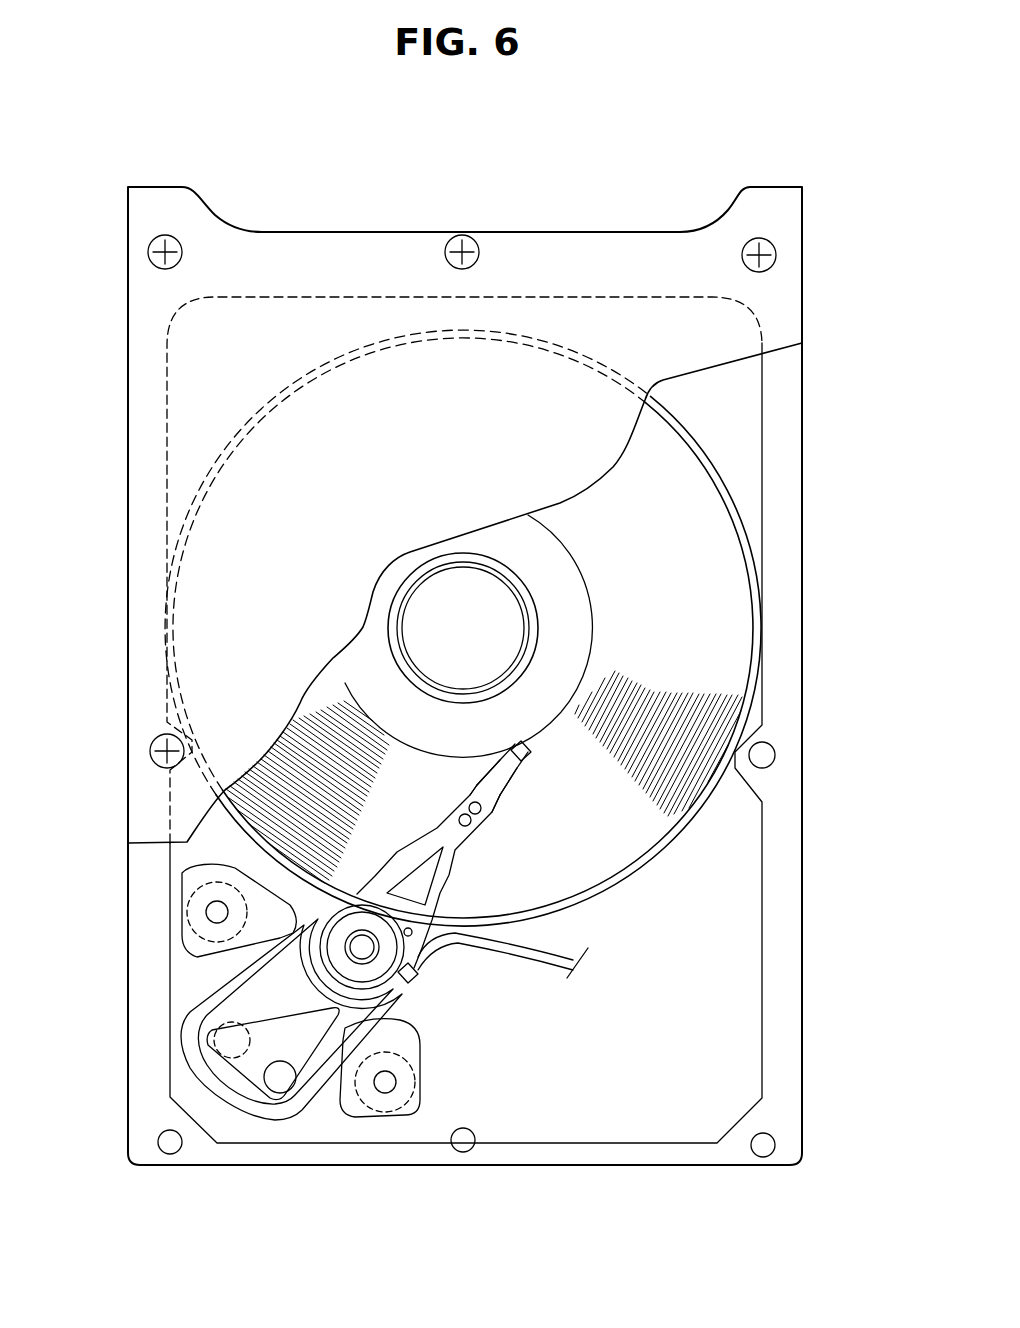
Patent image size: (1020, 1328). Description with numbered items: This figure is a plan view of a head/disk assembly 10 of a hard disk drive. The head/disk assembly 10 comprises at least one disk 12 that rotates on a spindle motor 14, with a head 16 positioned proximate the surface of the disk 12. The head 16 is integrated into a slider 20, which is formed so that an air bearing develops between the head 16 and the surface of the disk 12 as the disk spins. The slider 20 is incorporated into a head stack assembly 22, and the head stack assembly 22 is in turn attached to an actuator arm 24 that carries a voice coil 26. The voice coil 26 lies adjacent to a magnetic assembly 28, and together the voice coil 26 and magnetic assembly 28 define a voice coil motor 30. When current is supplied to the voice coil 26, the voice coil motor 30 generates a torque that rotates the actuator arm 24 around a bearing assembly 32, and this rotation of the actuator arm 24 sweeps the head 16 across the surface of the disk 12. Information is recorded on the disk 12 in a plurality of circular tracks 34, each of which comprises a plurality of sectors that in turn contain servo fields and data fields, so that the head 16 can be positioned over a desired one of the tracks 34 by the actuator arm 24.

The head/disk assembly 10 is at (596, 152).
The disk 12 is at (710, 567).
The spindle motor 14 is at (440, 603).
The head 16 is at (530, 754).
The slider 20 is at (507, 771).
The head stack assembly 22 is at (463, 864).
The actuator arm 24 is at (294, 962).
The voice coil 26 is at (200, 1034).
The magnetic assembly 28 is at (216, 977).
The voice coil motor 30 is at (333, 1098).
The bearing assembly 32 is at (378, 960).
The tracks 34 is at (325, 742).